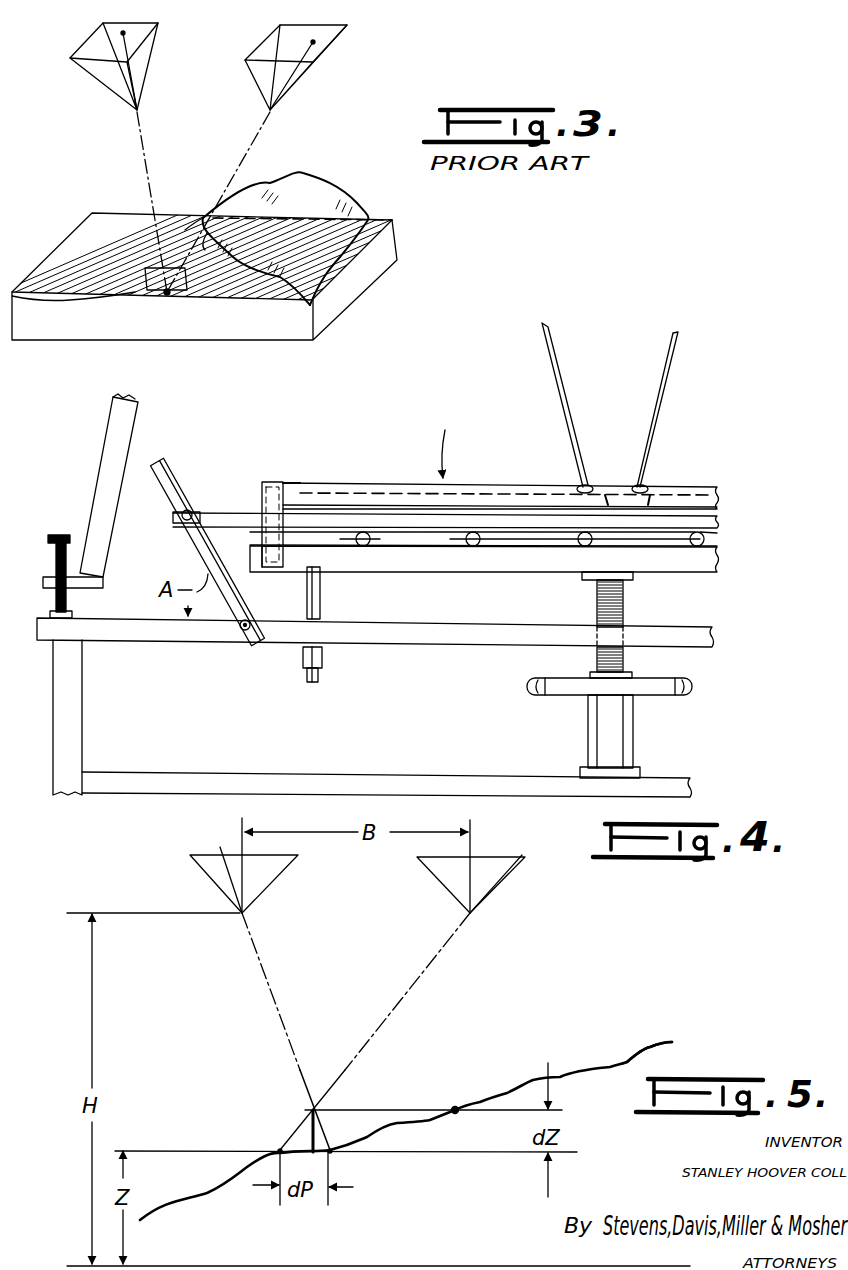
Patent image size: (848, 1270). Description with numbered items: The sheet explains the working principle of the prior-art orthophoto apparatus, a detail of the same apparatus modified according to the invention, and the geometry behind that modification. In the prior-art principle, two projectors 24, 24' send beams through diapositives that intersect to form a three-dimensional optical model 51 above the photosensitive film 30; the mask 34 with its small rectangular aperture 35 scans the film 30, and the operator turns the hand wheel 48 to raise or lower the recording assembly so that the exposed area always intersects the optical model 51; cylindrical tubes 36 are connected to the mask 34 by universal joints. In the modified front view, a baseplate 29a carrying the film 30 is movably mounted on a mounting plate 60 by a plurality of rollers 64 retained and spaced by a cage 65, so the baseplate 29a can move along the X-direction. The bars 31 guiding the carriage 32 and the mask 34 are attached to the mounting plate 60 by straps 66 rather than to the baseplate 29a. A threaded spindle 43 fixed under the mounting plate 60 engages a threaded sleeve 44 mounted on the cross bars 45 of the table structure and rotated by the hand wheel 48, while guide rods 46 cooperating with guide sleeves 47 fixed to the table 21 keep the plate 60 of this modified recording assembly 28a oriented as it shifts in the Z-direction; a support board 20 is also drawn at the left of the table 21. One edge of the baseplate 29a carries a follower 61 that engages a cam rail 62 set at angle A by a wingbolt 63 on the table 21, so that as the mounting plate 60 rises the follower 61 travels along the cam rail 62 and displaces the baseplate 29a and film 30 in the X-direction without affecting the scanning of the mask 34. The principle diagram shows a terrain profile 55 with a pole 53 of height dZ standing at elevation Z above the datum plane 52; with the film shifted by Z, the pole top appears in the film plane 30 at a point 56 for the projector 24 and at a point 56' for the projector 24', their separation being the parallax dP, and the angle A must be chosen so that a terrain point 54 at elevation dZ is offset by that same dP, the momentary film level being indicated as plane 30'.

In FIG. 4, the support board 20 is at (103, 465).
In FIG. 4, the table 21 is at (472, 640).
In FIG. 3, the projector 24 is at (96, 157).
In FIG. 5, the projector 24 is at (253, 981).
In FIG. 3, the projector 24' is at (280, 158).
In FIG. 5, the projector 24' is at (411, 984).
In FIG. 4, the modified recording assembly 28a is at (429, 442).
In FIG. 4, the baseplate 29a is at (718, 523).
In FIG. 3, the photosensitive layer or film 30 is at (312, 263).
In FIG. 4, the photosensitive layer or film 30 is at (501, 478).
In FIG. 5, the terrain profile 30' is at (406, 1131).
In FIG. 4, the bars 31 is at (280, 483).
In FIG. 4, the carriage 32 is at (530, 467).
In FIG. 3, the mask 34 is at (167, 293).
In FIG. 4, the mask 34 is at (650, 497).
In FIG. 3, the aperture 35 is at (167, 293).
In FIG. 4, the aperture 35 is at (608, 497).
In FIG. 4, the cylindrical tubes 36 is at (672, 382).
In FIG. 4, the threaded spindle 43 is at (625, 662).
In FIG. 4, the threaded sleeve 44 is at (613, 741).
In FIG. 4, the cross bars 45 is at (520, 764).
In FIG. 4, the guide rods 46 is at (320, 603).
In FIG. 4, the guide sleeves 47 is at (322, 658).
In FIG. 4, the hand wheel 48 is at (684, 692).
In FIG. 3, the three-dimensional optical model 51 is at (303, 175).
In FIG. 5, the datum plane 52 is at (475, 1240).
In FIG. 5, the pole 53 is at (310, 1133).
In FIG. 5, the point on the terrain 54 is at (455, 1107).
In FIG. 5, the profile section of the terrain 55 is at (627, 1062).
In FIG. 5, the point 56 is at (368, 1170).
In FIG. 5, the point 56' is at (217, 1133).
In FIG. 4, the mounting plate 60 is at (706, 560).
In FIG. 4, the follower 61 is at (191, 512).
In FIG. 4, the cam rail 62 is at (168, 470).
In FIG. 4, the wingbolt 63 is at (243, 632).
In FIG. 4, the rollers 64 is at (585, 547).
In FIG. 4, the cage 65 is at (717, 542).
In FIG. 4, the straps 66 is at (268, 480).